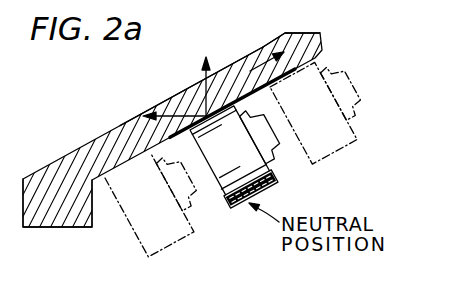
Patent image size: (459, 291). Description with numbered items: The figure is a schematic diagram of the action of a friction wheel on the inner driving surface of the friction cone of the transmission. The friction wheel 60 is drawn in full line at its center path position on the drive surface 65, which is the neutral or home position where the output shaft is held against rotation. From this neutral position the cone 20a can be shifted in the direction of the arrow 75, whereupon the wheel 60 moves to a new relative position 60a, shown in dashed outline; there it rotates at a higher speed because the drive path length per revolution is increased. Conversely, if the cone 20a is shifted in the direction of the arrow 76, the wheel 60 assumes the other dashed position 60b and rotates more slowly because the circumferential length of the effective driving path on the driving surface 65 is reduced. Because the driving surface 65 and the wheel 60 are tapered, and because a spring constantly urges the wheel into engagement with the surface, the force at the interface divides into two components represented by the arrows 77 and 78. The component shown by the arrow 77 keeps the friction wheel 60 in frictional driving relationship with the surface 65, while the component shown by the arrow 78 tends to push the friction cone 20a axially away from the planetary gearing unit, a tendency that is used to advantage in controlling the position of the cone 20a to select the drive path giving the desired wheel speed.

The friction cone 20a is at (227, 68).
The friction wheel 60 is at (238, 162).
The relative position of friction wheel 60a is at (364, 122).
The relative position of friction wheel 60b is at (138, 240).
The driving surface 65 is at (314, 58).
The arrow 75 is at (88, 162).
The arrow 76 is at (255, 45).
The arrow 77 is at (204, 80).
The arrow 78 is at (173, 111).